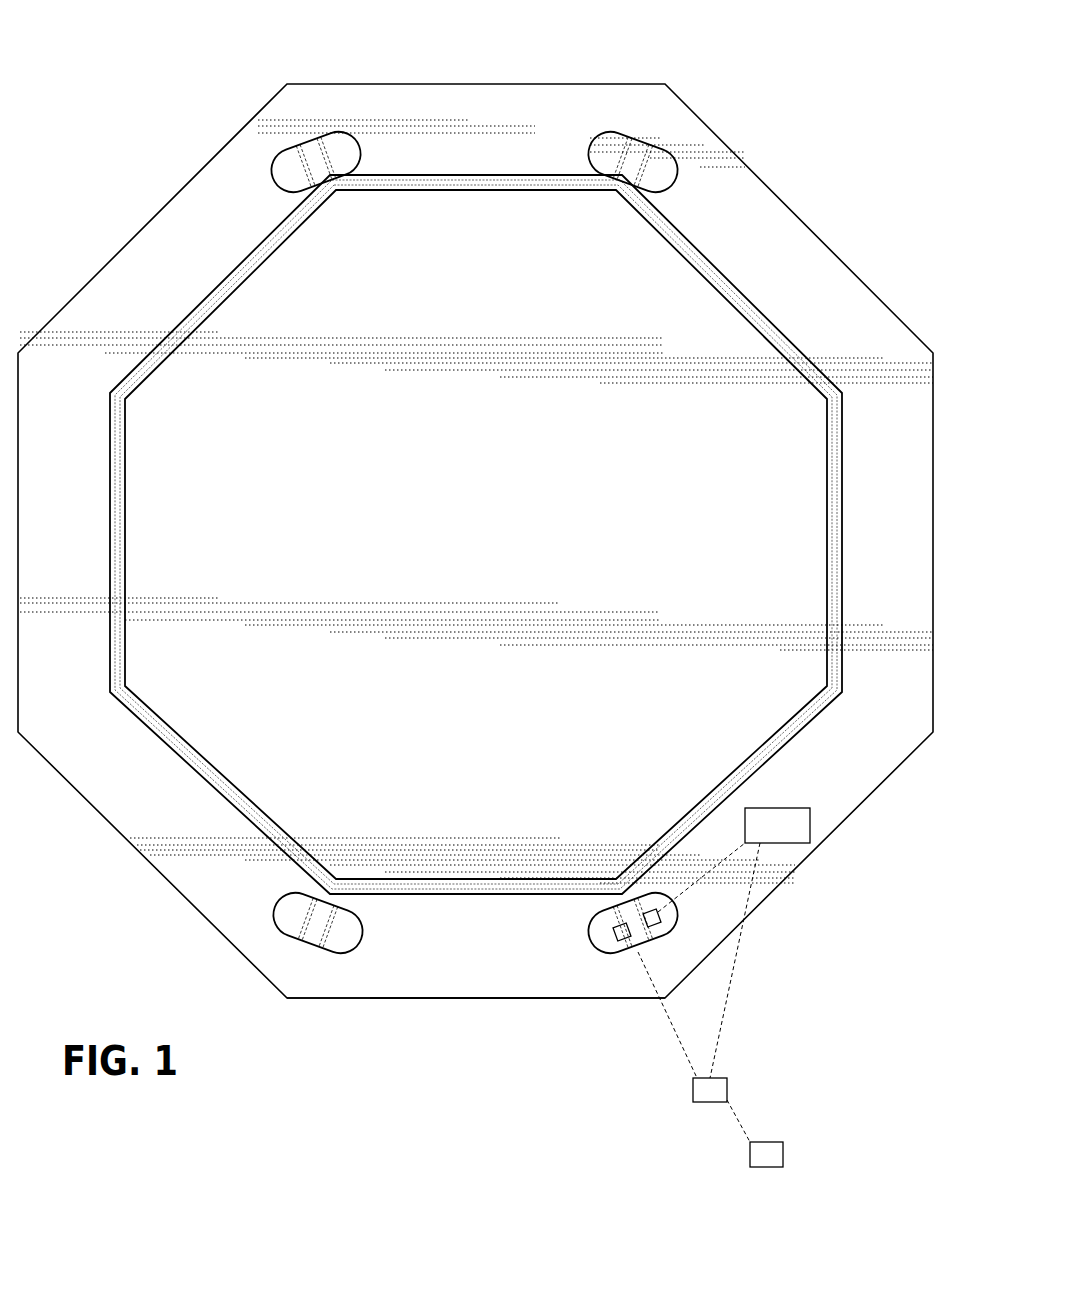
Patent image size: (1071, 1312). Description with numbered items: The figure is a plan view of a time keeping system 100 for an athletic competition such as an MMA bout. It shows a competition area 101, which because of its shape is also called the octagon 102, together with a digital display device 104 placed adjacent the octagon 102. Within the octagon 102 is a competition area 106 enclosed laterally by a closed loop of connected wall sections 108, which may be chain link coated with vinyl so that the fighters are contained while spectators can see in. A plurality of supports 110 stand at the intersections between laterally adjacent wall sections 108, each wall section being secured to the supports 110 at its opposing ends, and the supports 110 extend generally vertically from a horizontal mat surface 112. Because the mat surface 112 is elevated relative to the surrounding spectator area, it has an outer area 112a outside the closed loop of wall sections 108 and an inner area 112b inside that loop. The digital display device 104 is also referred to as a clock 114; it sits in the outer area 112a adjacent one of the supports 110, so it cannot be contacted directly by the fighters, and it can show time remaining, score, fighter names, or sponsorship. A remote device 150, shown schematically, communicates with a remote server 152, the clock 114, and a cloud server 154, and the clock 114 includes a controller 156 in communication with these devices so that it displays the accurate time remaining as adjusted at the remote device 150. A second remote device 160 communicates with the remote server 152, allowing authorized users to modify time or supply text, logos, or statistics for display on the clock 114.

The time keeping system 100 is at (746, 62).
The competition area 101 is at (163, 150).
The octagon 102 is at (166, 762).
The digital display device 104 is at (576, 948).
The competition area 106 is at (476, 501).
The wall sections 108 is at (722, 806).
The supports 110 is at (278, 893).
The mat surface 112 is at (373, 992).
The outer area 112a is at (475, 972).
The inner area 112b is at (475, 840).
The clock 114 is at (620, 940).
The remote device 150 is at (768, 808).
The remote server 152 is at (660, 936).
The cloud server 154 is at (727, 1095).
The controller 156 is at (654, 928).
The second remote device 160 is at (783, 1155).